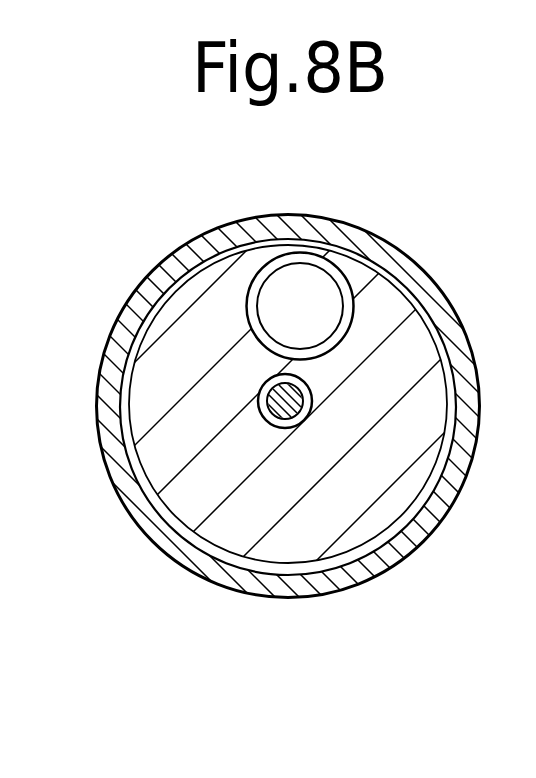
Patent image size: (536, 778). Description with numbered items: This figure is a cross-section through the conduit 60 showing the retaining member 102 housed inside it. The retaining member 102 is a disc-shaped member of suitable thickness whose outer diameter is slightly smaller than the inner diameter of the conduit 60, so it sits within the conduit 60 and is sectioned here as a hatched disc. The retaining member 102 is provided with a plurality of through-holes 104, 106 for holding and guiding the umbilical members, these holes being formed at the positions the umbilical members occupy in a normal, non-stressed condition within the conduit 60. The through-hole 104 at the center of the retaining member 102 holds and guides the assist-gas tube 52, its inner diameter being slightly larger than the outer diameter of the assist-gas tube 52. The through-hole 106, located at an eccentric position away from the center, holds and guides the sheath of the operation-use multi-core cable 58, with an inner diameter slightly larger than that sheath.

The assist-gas tube 52 is at (313, 395).
The operation-use multi-core cable 58 is at (305, 295).
The conduit 60 is at (122, 476).
The retaining member 102 is at (303, 532).
The through-hole 104 is at (272, 425).
The through-hole 106 is at (340, 282).